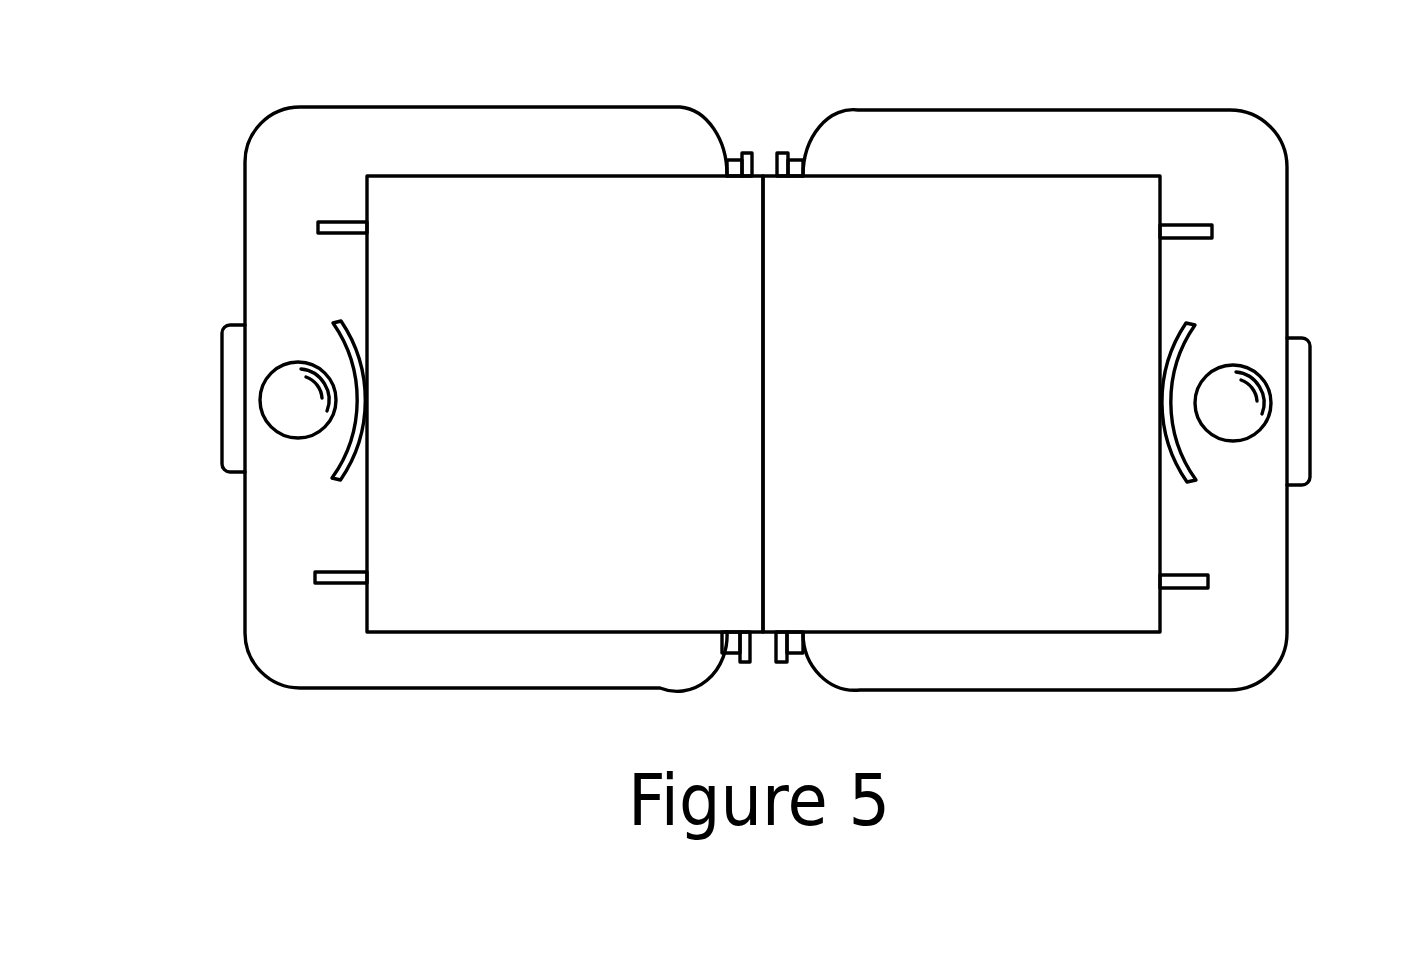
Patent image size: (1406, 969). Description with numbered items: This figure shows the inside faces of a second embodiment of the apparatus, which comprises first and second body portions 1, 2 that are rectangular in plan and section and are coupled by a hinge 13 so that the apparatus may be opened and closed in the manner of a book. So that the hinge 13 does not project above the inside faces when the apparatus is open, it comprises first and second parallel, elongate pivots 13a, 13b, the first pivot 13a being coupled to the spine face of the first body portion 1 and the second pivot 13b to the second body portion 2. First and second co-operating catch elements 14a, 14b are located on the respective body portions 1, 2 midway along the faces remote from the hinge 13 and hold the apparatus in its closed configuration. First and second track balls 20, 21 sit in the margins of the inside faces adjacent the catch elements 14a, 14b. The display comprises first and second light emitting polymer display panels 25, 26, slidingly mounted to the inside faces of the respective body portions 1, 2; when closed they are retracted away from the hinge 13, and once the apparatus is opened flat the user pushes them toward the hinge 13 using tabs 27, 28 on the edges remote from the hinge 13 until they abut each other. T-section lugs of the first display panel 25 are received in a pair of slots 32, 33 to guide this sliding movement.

The first body portion 1 is at (265, 178).
The second body portion 2 is at (1265, 190).
The hinge 13 is at (767, 165).
The first pivot 13a is at (742, 655).
The second pivot 13b is at (785, 655).
The first catch element 14a is at (235, 393).
The second catch element 14b is at (1297, 397).
The first track ball 20 is at (292, 417).
The second track ball 21 is at (1233, 400).
The first display panel 25 is at (522, 247).
The second display panel 26 is at (995, 262).
The tab 27 is at (340, 330).
The tab 28 is at (1189, 477).
The slot 32 is at (332, 578).
The slot 33 is at (345, 232).